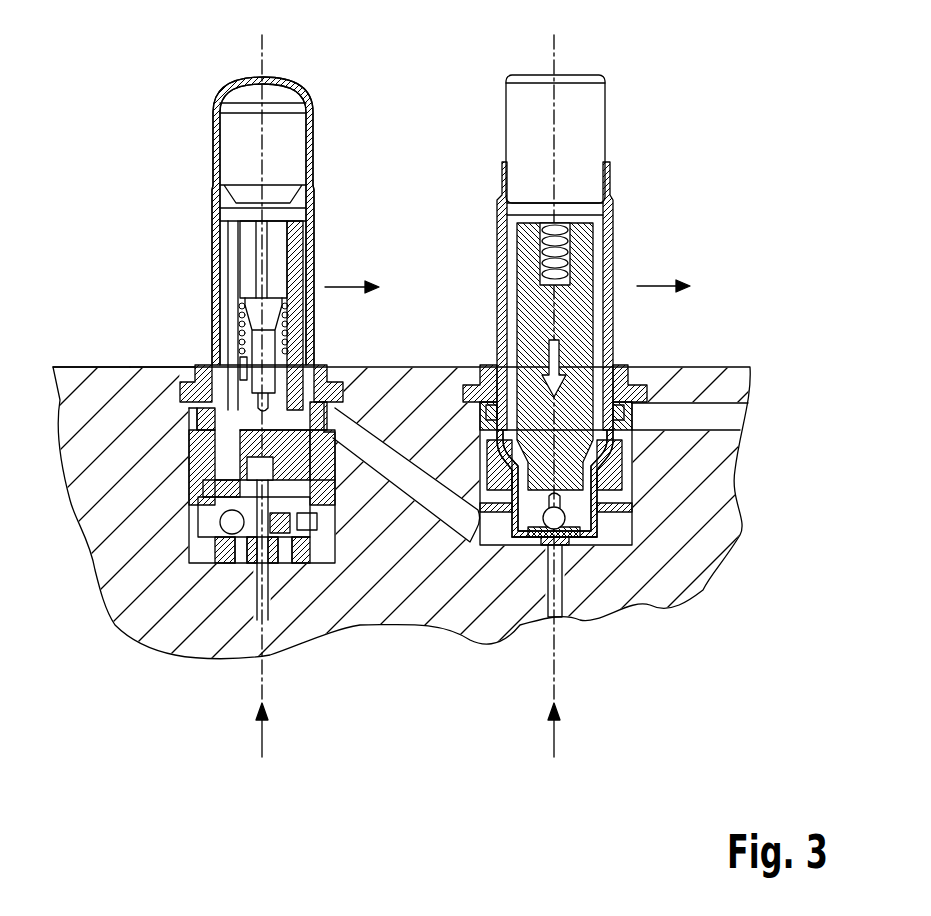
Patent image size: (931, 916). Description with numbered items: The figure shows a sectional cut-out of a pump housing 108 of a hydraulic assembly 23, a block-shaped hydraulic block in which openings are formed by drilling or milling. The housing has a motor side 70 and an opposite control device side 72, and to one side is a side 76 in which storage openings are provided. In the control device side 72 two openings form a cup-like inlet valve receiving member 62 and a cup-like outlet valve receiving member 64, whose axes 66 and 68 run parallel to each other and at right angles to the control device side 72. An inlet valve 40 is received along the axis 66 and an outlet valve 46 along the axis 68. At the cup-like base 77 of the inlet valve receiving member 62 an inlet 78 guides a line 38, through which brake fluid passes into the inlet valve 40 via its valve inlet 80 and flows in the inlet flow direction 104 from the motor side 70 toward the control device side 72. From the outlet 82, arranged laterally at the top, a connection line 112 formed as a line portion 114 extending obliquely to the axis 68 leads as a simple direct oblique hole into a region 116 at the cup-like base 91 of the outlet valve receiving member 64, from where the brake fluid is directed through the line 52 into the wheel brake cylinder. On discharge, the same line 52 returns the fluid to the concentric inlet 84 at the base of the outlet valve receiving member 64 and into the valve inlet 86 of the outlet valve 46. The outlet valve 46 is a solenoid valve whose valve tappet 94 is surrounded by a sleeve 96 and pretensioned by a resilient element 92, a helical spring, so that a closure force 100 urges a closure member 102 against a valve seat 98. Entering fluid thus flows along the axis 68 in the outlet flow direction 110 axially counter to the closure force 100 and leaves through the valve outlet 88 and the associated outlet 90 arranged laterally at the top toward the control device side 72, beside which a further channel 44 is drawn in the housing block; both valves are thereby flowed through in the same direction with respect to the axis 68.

The hydraulic assembly 23 is at (92, 140).
The line 38 is at (258, 618).
The first inlet valve 40 is at (233, 132).
The hydraulic channel 44 is at (735, 418).
The first outlet valve 46 is at (520, 132).
The line 52 is at (562, 598).
The inlet valve receiving member 62 is at (193, 552).
The outlet valve receiving member 64 is at (625, 522).
The axis 66 is at (260, 48).
The axis 68 is at (556, 48).
The motor side 70 is at (160, 808).
The control device side 72 is at (138, 354).
The side 76 is at (749, 533).
The cup-like base 77 is at (327, 550).
The inlet 78 is at (197, 563).
The valve inlet 80 is at (222, 556).
The outlet 82 is at (340, 412).
The inlet 84 is at (548, 548).
The valve inlet 86 is at (538, 550).
The valve outlet 88 is at (630, 417).
The outlet 90 is at (628, 428).
The cup-like base 91 is at (618, 540).
The resilient element 92 is at (588, 238).
The valve tappet 94 is at (583, 267).
The sleeve 96 is at (613, 295).
The valve seat 98 is at (562, 548).
The closure force 100 is at (560, 347).
The closure member 102 is at (590, 493).
The inlet flow direction 104 is at (342, 283).
The pump housing 108 is at (78, 378).
The outlet flow direction 110 is at (654, 286).
The connection line 112 is at (412, 498).
The line portion 114 is at (397, 462).
The region 116 is at (395, 555).